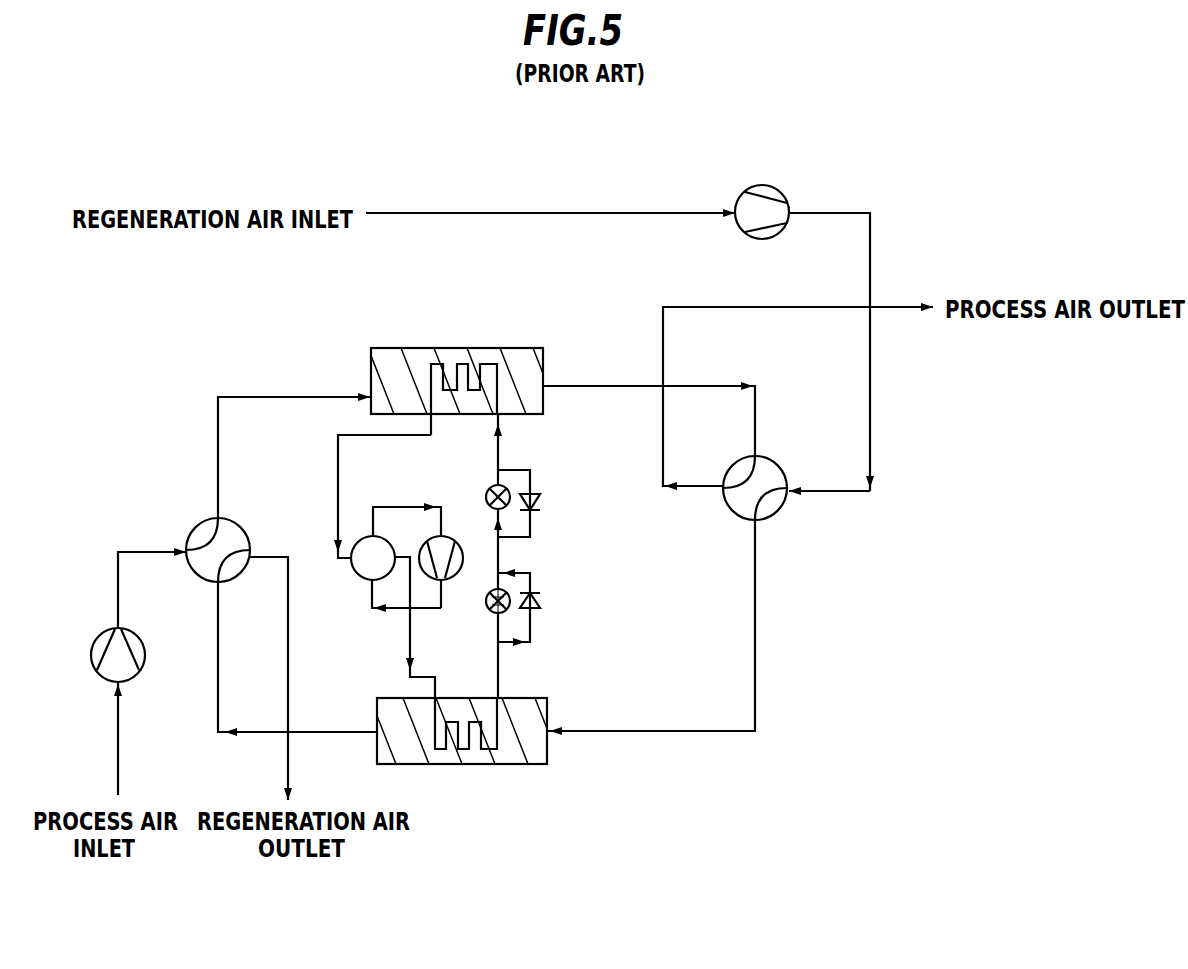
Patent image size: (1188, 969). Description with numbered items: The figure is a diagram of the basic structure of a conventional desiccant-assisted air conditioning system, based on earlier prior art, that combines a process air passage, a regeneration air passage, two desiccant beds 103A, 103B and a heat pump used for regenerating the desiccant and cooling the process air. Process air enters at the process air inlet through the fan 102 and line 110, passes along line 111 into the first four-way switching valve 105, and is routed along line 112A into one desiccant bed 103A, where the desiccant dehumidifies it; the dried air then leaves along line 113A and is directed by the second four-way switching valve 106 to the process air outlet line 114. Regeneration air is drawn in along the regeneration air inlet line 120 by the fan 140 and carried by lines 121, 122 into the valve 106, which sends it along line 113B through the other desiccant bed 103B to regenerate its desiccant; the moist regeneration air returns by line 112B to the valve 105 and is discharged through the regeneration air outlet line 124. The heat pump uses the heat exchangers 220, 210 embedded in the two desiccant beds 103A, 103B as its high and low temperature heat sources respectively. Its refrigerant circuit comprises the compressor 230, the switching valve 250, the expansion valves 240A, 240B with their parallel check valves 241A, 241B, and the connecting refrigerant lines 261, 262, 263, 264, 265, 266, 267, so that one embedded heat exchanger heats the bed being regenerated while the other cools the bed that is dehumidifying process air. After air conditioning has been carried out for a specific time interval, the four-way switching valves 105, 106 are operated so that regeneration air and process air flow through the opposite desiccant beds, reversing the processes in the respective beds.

The process air fan 102 is at (145, 652).
The desiccant bed 103A is at (418, 352).
The desiccant bed 103B is at (450, 767).
The four-way switching valve 105 is at (203, 523).
The four-way switching valve 106 is at (730, 512).
The process air inlet line 110 is at (118, 763).
The process air line to first rotor 111 is at (118, 552).
The process air line to first heat exchanger 112A is at (240, 397).
The air line from second heat exchanger 112B is at (262, 732).
The air line from first heat exchanger 113A is at (580, 386).
The air line to second heat exchanger 113B is at (658, 728).
The process air outlet line 114 is at (718, 306).
The regeneration air inlet line 120 is at (588, 212).
The regeneration air line from fan 121 is at (873, 257).
The regeneration air line to second rotor 122 is at (822, 493).
The regeneration air outlet line 124 is at (287, 766).
The regeneration air fan 140 is at (775, 236).
The heat exchanger 210 is at (498, 762).
The heat exchanger 220 is at (475, 352).
The compressor 230 is at (458, 580).
The first expansion valve 240A is at (508, 487).
The second expansion valve 240B is at (508, 610).
The first check valve 241A is at (542, 493).
The second check valve 241B is at (542, 600).
The four-way switching valve 250 is at (357, 573).
The refrigerant line 261 is at (337, 453).
The refrigerant line 262 is at (372, 515).
The refrigerant line 263 is at (370, 594).
The refrigerant line 264 is at (403, 645).
The refrigerant line 265 is at (505, 678).
The refrigerant line 266 is at (505, 552).
The refrigerant line 267 is at (505, 443).